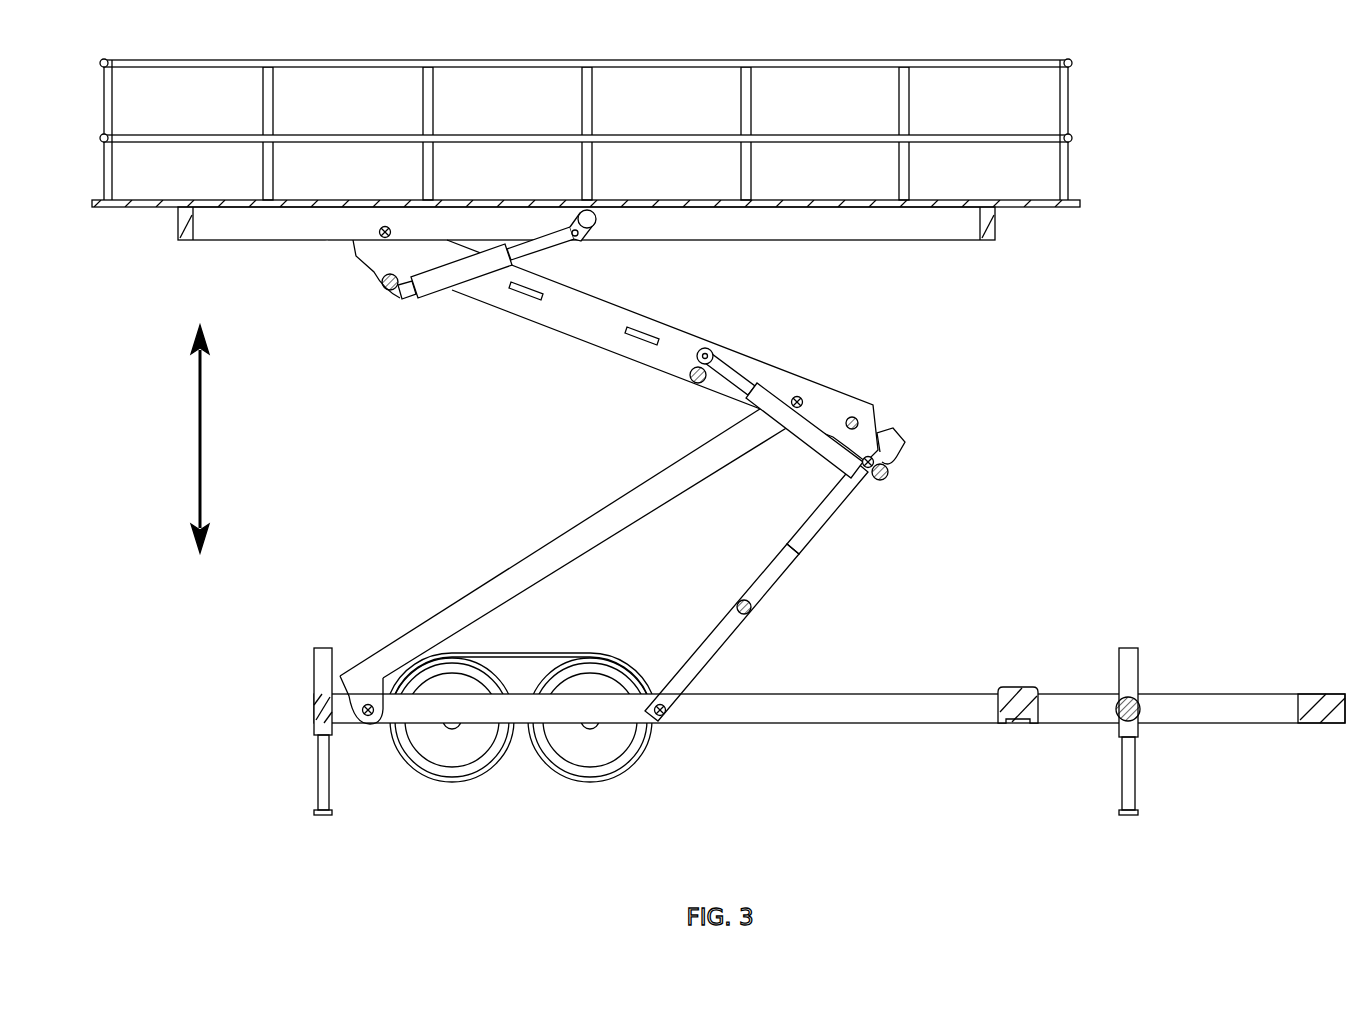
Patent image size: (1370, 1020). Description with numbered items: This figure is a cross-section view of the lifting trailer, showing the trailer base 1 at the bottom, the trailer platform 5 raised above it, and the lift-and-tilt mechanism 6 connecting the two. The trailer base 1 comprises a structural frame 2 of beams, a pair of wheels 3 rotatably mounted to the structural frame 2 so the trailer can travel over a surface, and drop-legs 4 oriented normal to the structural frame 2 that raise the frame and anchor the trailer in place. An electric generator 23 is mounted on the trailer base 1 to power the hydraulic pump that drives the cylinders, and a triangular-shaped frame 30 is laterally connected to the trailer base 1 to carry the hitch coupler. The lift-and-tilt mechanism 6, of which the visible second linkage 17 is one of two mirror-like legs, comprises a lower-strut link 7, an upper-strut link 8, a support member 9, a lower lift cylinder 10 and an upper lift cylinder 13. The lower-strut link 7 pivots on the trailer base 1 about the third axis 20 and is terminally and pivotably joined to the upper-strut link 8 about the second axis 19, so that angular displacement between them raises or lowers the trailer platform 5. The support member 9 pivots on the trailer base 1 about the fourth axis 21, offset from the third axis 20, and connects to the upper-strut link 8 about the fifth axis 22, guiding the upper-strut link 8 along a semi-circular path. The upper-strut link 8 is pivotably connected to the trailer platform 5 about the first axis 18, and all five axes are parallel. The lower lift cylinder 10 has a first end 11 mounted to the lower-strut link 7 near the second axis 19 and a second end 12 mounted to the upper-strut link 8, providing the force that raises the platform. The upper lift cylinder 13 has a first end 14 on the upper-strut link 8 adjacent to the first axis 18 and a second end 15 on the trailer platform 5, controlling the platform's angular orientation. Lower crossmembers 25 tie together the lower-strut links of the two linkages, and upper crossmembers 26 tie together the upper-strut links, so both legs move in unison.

The trailer base 1 is at (808, 767).
The structural frame 2 is at (770, 715).
The pair of wheels 3 is at (456, 776).
The drop-legs 4 is at (320, 665).
The trailer platform 5 is at (661, 79).
The lift-and-tilt mechanism 6 is at (702, 467).
The second linkage 17 is at (702, 467).
The lower-strut link 7 is at (795, 565).
The upper-strut link 8 is at (628, 348).
The support member 9 is at (578, 548).
The lower lift cylinder 10 is at (806, 445).
The arm upper end 11 is at (852, 498).
The second end of the lower lift cylinder 12 is at (729, 348).
The upper lift cylinder 13 is at (455, 272).
The first end of the upper lift cylinder 14 is at (427, 309).
The second end of the upper lift cylinder 15 is at (588, 244).
The first axis 18 is at (380, 232).
The second axis 19 is at (892, 445).
The third axis 20 is at (655, 712).
The fourth axis 21 is at (385, 708).
The fifth axis 22 is at (805, 400).
The electric generator 23 is at (1003, 690).
The lower crossmembers 25 is at (883, 478).
The upper crossmembers 26 is at (525, 298).
The triangular-shaped frame 30 is at (1240, 692).